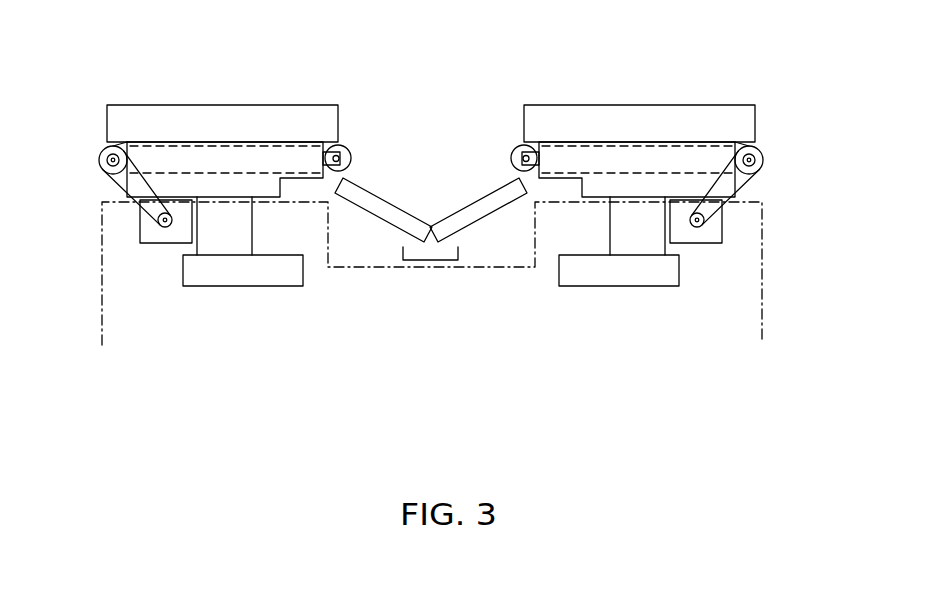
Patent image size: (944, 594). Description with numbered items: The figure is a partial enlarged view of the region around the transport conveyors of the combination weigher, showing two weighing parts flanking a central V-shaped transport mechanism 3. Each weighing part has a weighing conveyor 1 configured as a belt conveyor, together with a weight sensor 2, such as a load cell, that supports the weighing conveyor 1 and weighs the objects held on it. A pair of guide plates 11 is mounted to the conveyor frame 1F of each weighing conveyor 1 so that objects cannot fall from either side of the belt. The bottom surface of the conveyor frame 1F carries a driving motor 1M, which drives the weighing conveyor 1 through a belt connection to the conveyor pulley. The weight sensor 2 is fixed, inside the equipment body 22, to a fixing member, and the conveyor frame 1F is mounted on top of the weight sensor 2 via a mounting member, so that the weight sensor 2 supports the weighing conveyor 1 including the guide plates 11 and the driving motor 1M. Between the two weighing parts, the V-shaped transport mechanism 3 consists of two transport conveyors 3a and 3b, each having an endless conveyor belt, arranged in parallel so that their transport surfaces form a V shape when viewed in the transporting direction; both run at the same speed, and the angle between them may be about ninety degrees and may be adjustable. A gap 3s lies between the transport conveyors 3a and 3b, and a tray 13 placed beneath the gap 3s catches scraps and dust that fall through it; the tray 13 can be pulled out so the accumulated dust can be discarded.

The weighing conveyor 1 is at (90, 154).
The guide plate 11 is at (220, 104).
The conveyor frame 1F is at (262, 187).
The driving motor 1M is at (163, 243).
The weight sensor 2 is at (228, 286).
The V-shaped transport mechanism 3 is at (431, 153).
The transport conveyor 3a is at (487, 198).
The transport conveyor 3b is at (380, 195).
The gap 3s is at (431, 247).
The tray 13 is at (403, 250).
The equipment body 22 is at (762, 255).